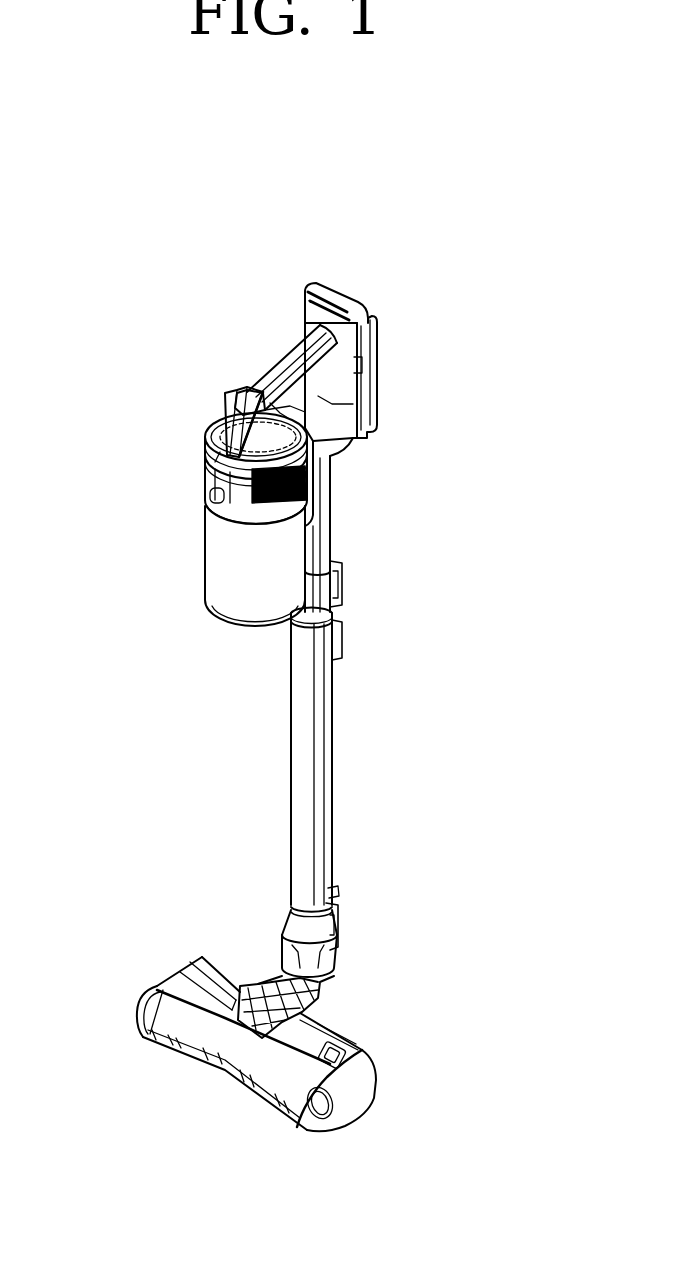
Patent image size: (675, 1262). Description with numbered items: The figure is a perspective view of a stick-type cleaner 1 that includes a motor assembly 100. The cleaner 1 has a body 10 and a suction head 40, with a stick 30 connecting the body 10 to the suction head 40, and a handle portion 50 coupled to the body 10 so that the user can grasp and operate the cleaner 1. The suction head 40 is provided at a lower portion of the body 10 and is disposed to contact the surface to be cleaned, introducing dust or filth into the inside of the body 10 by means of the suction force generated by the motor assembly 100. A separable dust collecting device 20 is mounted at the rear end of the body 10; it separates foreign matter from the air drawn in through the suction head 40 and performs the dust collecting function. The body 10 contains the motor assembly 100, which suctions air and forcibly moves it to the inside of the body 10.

The stick-type cleaner 1 is at (245, 307).
The body 10 is at (206, 455).
The motor assembly 100 is at (206, 481).
The dust collecting device 20 is at (214, 578).
The stick 30 is at (291, 773).
The suction head 40 is at (139, 993).
The handle portion 50 is at (286, 361).